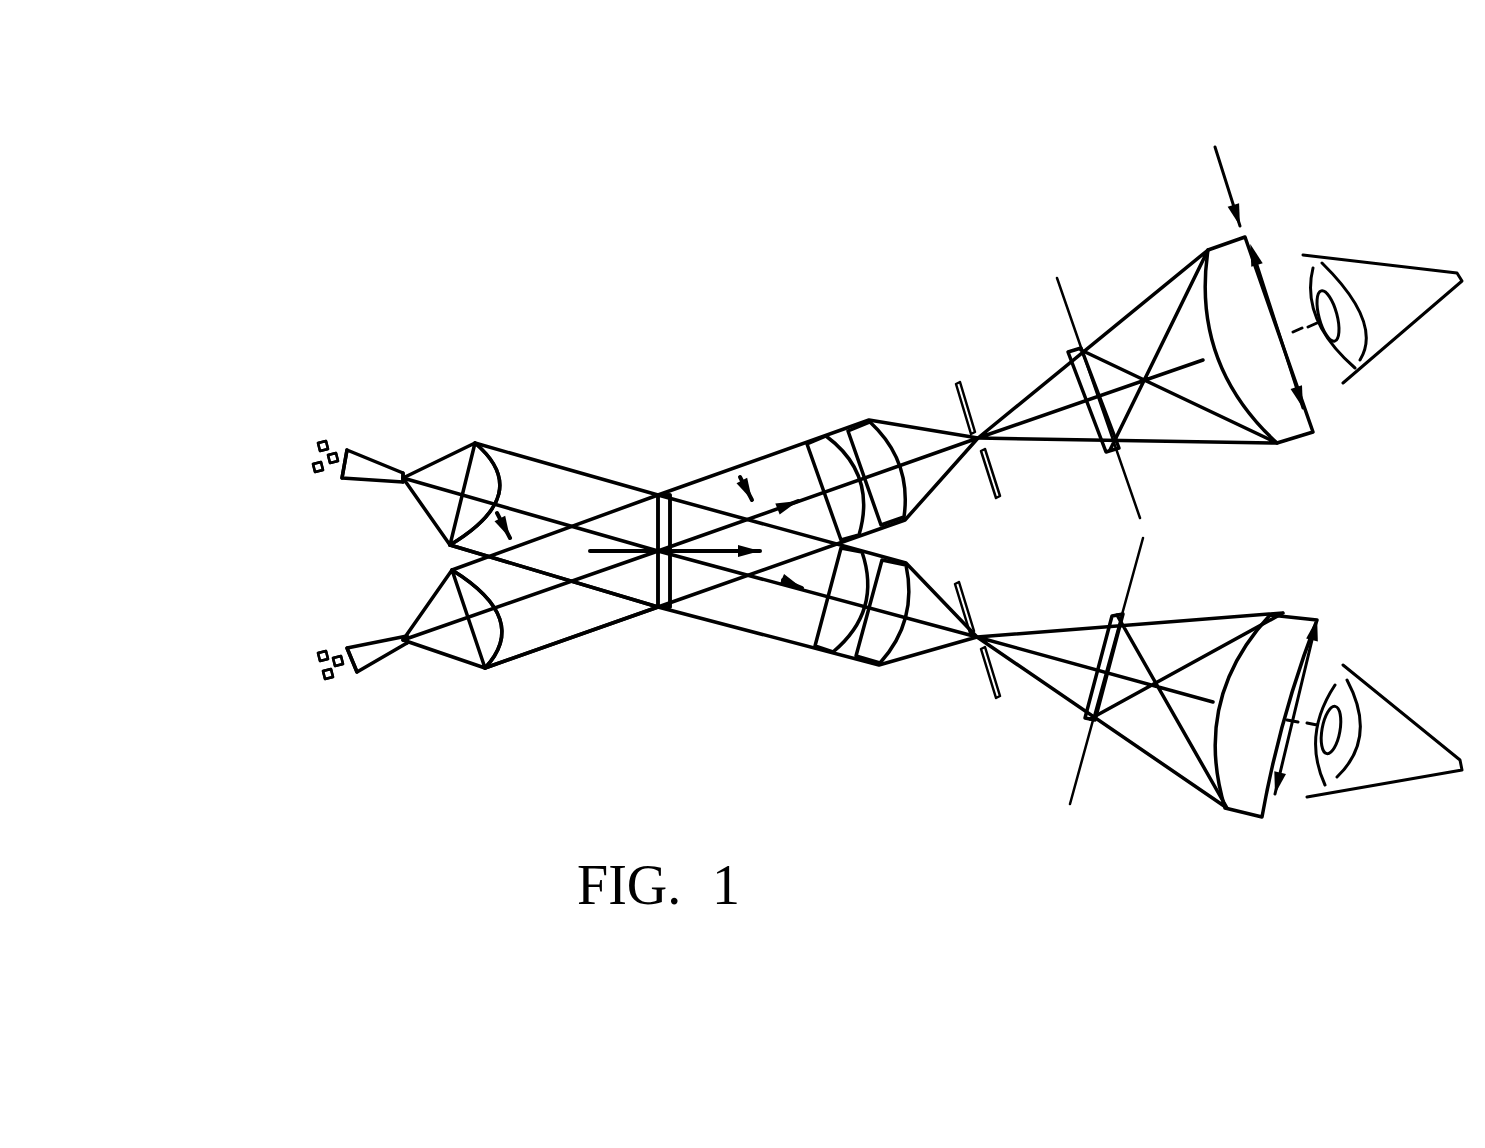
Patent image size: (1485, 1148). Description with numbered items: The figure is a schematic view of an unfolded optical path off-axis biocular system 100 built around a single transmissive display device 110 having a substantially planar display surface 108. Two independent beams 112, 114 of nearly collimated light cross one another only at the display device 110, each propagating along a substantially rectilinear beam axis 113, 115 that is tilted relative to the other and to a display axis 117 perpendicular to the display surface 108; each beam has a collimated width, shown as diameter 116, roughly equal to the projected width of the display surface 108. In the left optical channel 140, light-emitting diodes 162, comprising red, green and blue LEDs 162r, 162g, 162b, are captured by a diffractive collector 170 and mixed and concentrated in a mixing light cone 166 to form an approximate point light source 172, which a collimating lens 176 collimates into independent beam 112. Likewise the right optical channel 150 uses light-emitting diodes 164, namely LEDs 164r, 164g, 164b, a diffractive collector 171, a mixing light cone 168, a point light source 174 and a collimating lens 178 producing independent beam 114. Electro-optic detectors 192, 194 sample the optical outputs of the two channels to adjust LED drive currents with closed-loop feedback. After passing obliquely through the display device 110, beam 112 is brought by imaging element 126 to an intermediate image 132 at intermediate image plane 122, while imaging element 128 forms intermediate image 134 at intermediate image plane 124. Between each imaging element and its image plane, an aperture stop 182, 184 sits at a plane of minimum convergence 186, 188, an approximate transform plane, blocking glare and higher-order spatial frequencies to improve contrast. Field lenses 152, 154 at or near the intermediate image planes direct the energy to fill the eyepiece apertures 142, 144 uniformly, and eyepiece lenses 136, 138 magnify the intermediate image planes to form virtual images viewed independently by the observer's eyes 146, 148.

The off-axis biocular system 100 is at (513, 270).
The display surface 108 is at (673, 510).
The transmissive display device 110 is at (663, 613).
The independent beam 112 is at (566, 448).
The beam axis 113 is at (772, 607).
The independent beam 114 is at (528, 682).
The beam axis 115 is at (773, 507).
The diameter 116 is at (700, 627).
The display axis 117 is at (710, 545).
The intermediate image plane 122 is at (1078, 783).
The intermediate image plane 124 is at (1060, 286).
The imaging element 126 is at (842, 696).
The imaging element 128 is at (839, 428).
The intermediate image 132 is at (1072, 712).
The intermediate image 134 is at (1135, 305).
The eyepiece lens 136 is at (1273, 788).
The eyepiece lens 138 is at (1254, 268).
The left optical channel 140 is at (448, 443).
The eyepiece aperture 142 is at (1326, 610).
The eyepiece aperture 144 is at (1320, 445).
The eye 146 is at (1390, 722).
The eye 148 is at (1382, 268).
The right optical channel 150 is at (431, 676).
The field lens 152 is at (1130, 633).
The field lens 154 is at (1118, 426).
The light-emitting diodes 162 is at (234, 441).
The red LED 162r is at (318, 447).
The green LED 162g is at (327, 458).
The blue LED 162b is at (313, 468).
The light-emitting diodes 164 is at (236, 687).
The blue LED 164b is at (318, 654).
The green LED 164g is at (333, 662).
The red LED 164r is at (323, 676).
The mixing light cone 166 is at (371, 442).
The mixing light cone 168 is at (400, 636).
The diffractive collector 170 is at (345, 449).
The diffractive collector 171 is at (346, 649).
The point light source 172 is at (410, 462).
The point light source 174 is at (408, 656).
The collimating lens 176 is at (486, 440).
The collimating lens 178 is at (487, 682).
The aperture stop 182 is at (990, 700).
The aperture stop 184 is at (959, 381).
The plane of minimum convergence 186 is at (972, 637).
The plane of minimum convergence 188 is at (980, 450).
The electro-optic detector 192 is at (340, 448).
The electro-optic detector 194 is at (345, 677).